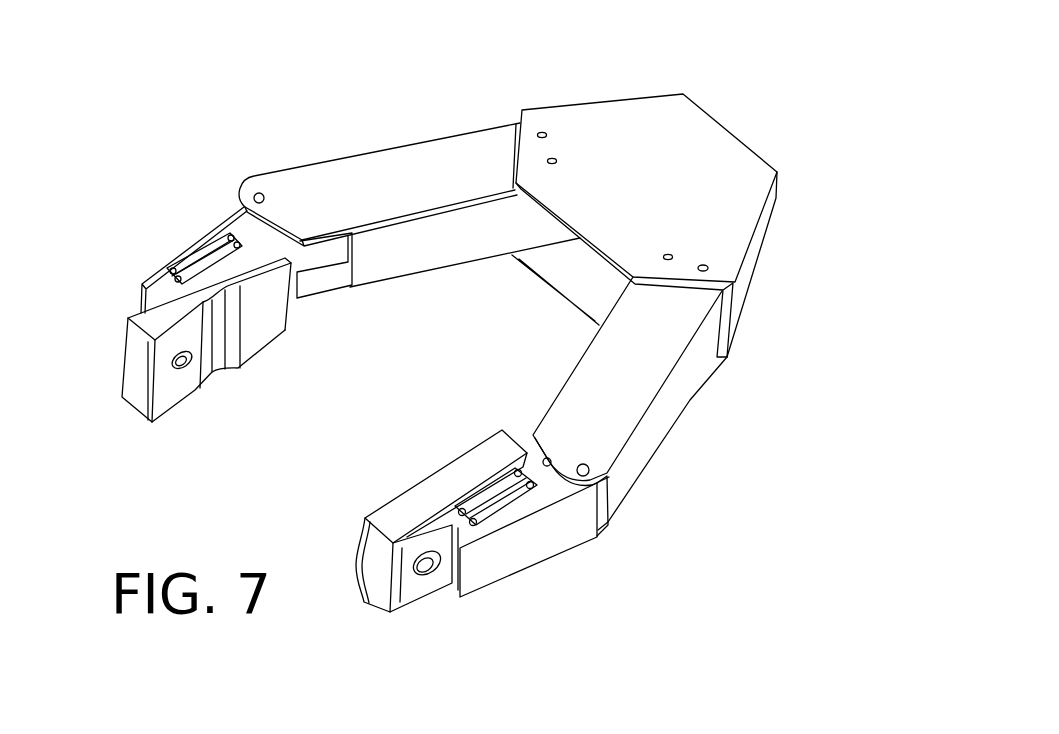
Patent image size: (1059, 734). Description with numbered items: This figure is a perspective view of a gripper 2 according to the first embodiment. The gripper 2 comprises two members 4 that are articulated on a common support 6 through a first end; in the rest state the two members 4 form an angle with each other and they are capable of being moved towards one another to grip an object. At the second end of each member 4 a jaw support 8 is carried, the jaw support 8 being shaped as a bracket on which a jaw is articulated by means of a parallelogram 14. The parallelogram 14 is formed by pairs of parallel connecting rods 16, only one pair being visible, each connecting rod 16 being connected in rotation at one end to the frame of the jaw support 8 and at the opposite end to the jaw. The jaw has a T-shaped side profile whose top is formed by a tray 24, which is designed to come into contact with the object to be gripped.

The gripper 2 is at (331, 107).
The member 4 is at (435, 141).
The support 6 is at (690, 150).
The jaw support 8 is at (201, 229).
The parallelogram 14 is at (213, 241).
The connecting rods 16 is at (183, 267).
The tray 24 is at (442, 567).